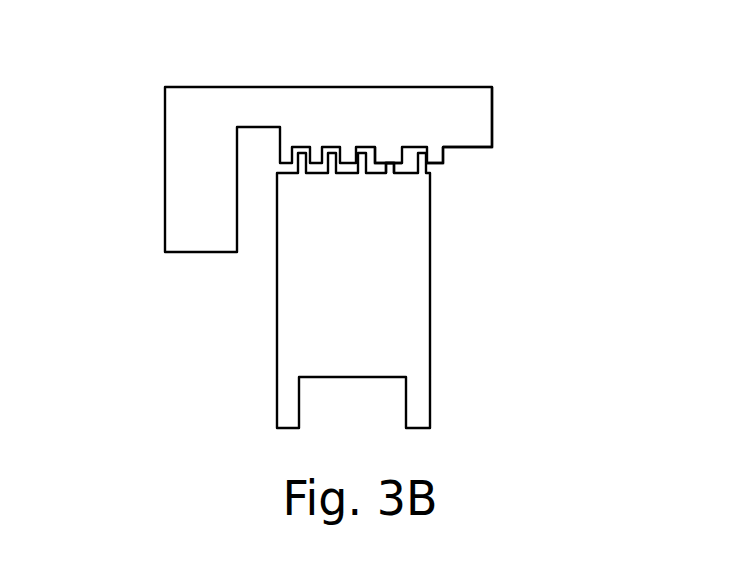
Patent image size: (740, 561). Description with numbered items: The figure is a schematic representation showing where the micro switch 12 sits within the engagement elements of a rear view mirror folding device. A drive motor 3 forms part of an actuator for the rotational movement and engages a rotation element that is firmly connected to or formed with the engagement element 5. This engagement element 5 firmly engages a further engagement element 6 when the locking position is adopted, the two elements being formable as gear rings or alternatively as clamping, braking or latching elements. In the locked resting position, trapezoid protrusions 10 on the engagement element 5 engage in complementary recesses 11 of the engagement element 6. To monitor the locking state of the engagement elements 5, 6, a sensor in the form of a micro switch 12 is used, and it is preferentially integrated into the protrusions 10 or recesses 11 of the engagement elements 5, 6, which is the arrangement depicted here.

The drive motor 3 is at (184, 160).
The engagement element 5 is at (475, 112).
The engagement element 6 is at (408, 225).
The trapezoid protrusions 10 is at (432, 163).
The recesses 11 is at (382, 173).
The micro switch 12 is at (388, 152).